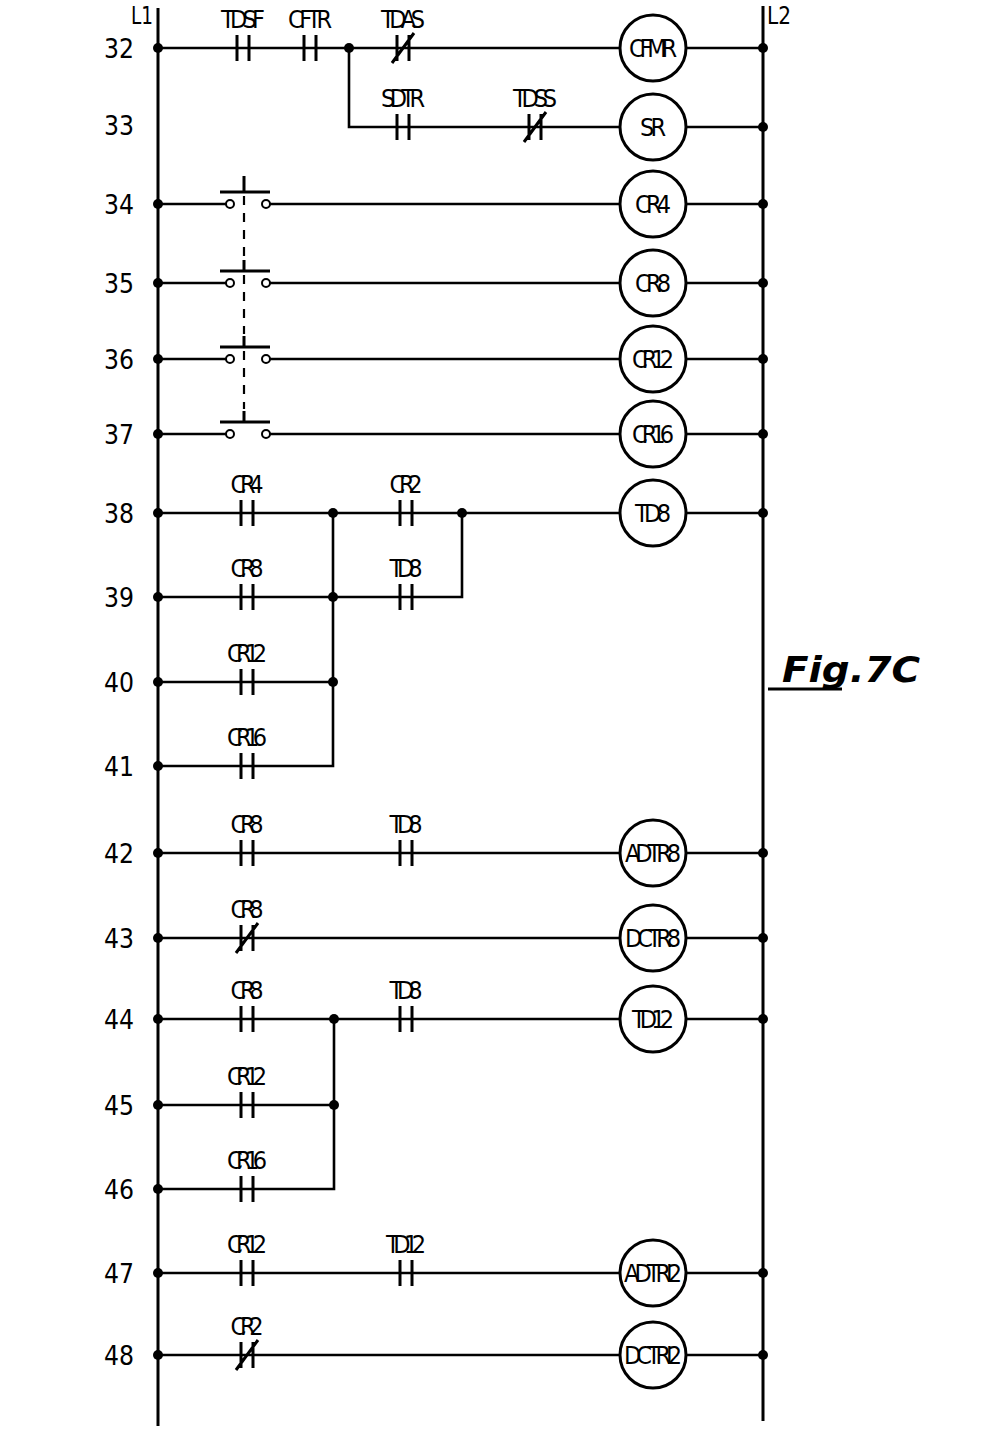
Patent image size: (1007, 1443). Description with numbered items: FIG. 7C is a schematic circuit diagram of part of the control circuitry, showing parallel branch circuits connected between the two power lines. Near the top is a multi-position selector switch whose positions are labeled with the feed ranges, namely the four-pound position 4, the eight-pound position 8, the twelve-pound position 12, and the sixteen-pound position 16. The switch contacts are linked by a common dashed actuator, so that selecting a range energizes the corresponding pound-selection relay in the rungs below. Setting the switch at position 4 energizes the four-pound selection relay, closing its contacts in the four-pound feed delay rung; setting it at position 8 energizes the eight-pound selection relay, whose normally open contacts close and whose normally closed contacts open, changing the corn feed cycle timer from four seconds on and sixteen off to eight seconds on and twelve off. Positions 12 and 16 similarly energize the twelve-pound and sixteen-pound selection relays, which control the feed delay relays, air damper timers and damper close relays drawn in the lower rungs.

The 4-lb. selector switch position 4 is at (238, 175).
The 8-lb. selector switch position 8 is at (240, 172).
The 12-lb. selector switch position 12 is at (248, 172).
The 16-lb. selector switch position 16 is at (250, 175).